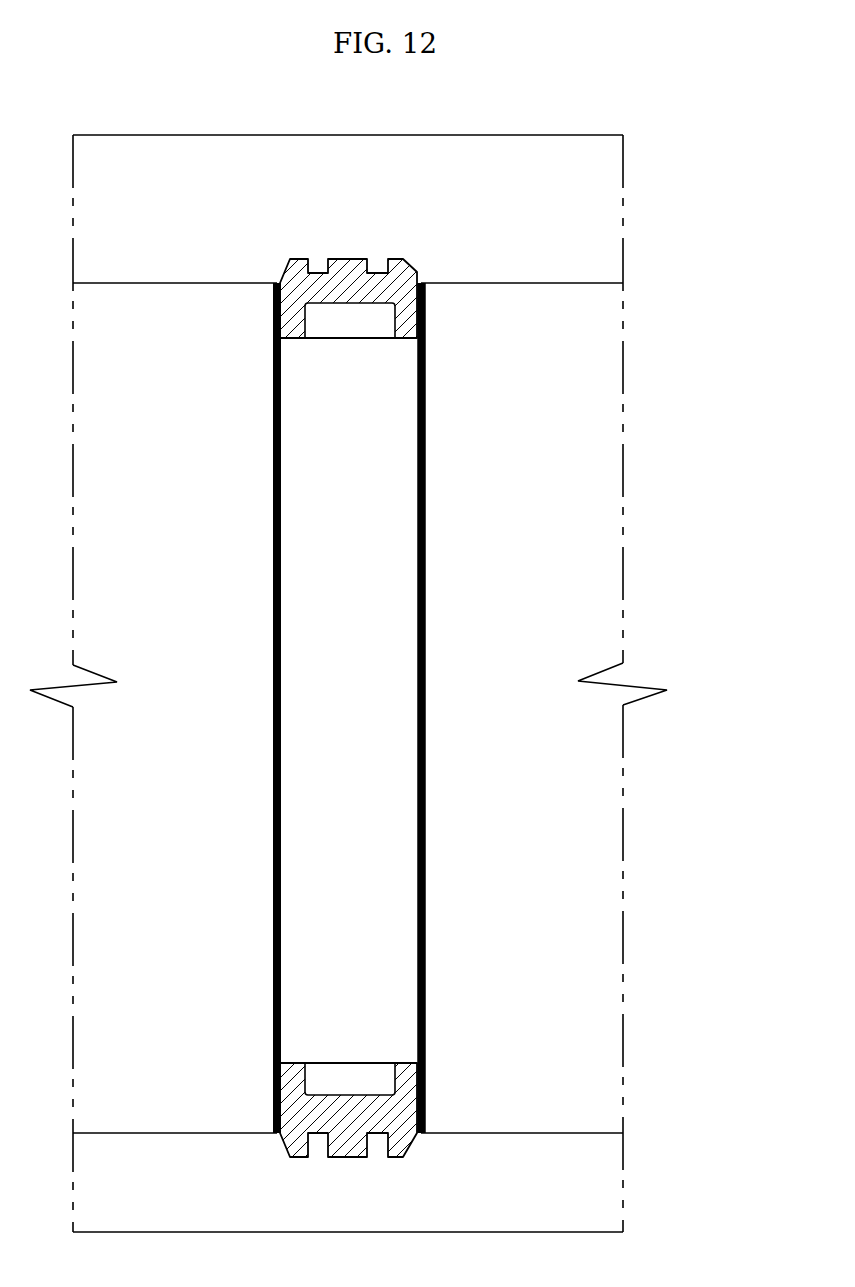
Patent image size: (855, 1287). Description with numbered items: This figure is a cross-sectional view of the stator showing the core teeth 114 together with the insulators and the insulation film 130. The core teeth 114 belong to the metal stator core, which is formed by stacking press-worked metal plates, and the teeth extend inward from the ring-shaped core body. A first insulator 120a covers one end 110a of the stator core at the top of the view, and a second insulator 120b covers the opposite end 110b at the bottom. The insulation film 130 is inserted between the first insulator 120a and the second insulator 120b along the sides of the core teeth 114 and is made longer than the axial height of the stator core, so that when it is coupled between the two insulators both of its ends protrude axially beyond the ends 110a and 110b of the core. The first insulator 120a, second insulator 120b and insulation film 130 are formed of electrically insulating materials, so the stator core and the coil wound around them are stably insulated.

The end of the stator core 110a is at (350, 338).
The end of the stator core 110b is at (350, 1063).
The core teeth 114 is at (360, 450).
The first insulator 120a is at (350, 278).
The second insulator 120b is at (348, 1133).
The insulation film 130 is at (425, 548).